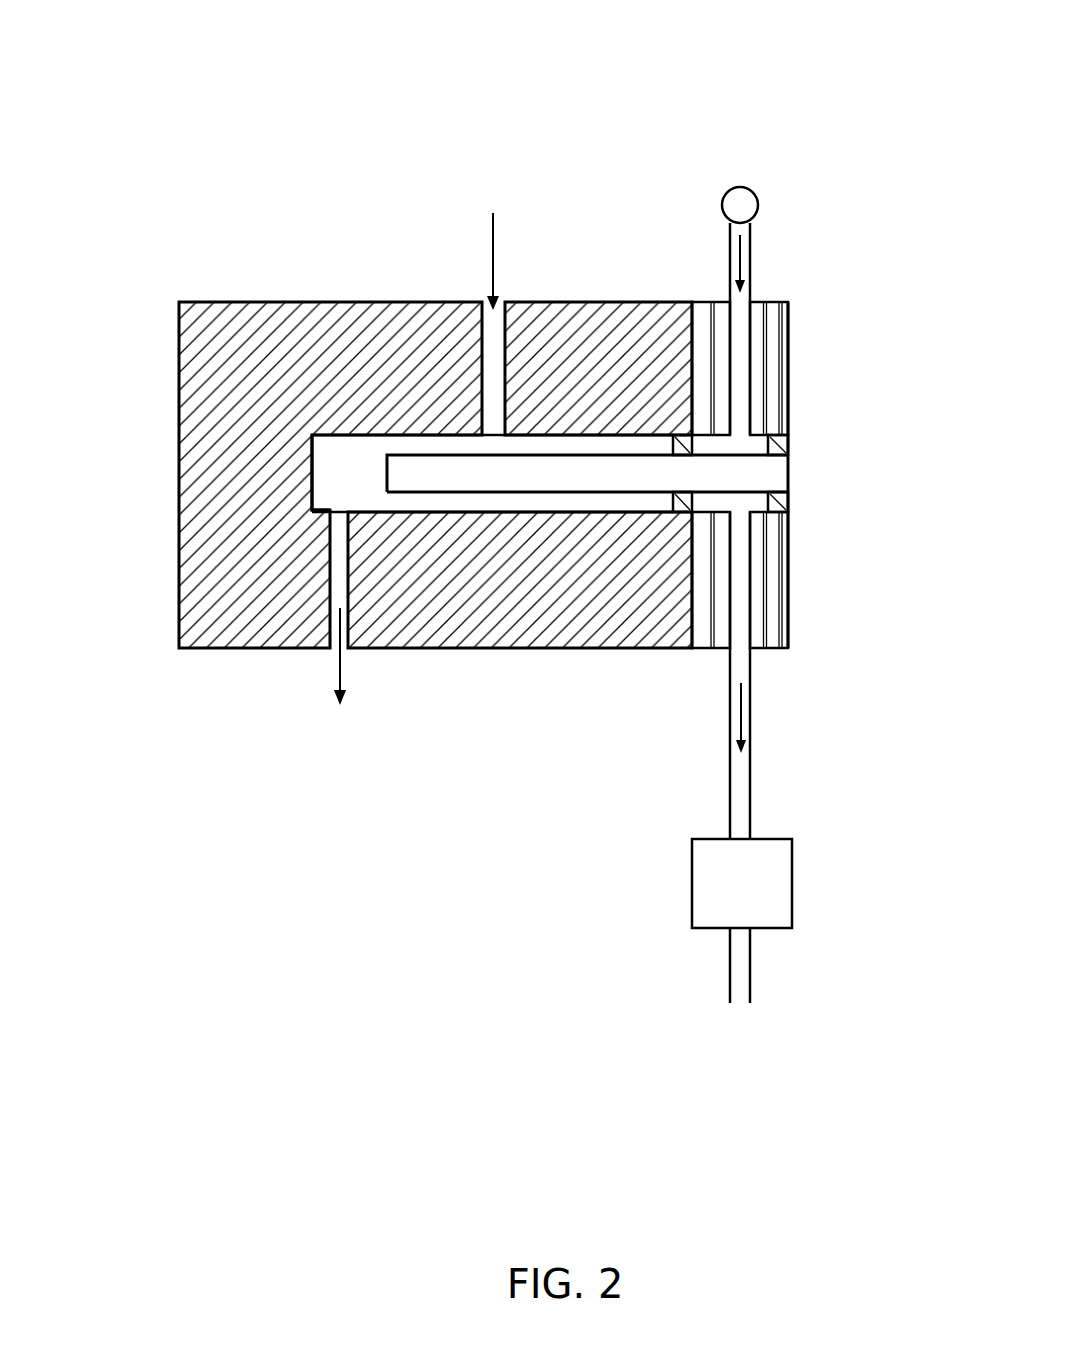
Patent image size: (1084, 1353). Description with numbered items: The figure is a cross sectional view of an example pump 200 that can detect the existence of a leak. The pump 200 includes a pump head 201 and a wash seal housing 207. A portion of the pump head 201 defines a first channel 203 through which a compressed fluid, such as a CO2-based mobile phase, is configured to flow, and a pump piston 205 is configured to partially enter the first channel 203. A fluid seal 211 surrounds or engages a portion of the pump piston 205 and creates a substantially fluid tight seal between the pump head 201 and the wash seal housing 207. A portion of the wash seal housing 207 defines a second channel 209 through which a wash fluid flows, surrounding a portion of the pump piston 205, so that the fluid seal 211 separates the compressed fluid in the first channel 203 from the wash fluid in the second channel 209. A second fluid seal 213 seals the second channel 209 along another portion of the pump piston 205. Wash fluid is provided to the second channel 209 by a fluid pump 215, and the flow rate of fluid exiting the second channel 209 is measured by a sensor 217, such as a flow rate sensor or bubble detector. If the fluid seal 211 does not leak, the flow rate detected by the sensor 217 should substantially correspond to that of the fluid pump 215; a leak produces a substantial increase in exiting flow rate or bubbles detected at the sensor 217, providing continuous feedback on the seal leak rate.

The pump 200 is at (365, 82).
The pump head 201 is at (328, 382).
The first channel 203 is at (332, 478).
The pump piston 205 is at (489, 489).
The wash seal housing 207 is at (783, 570).
The second channel 209 is at (743, 613).
The fluid seal 211 is at (677, 498).
The second fluid seal 213 is at (787, 500).
The fluid pump 215 is at (757, 196).
The sensor 217 is at (762, 897).